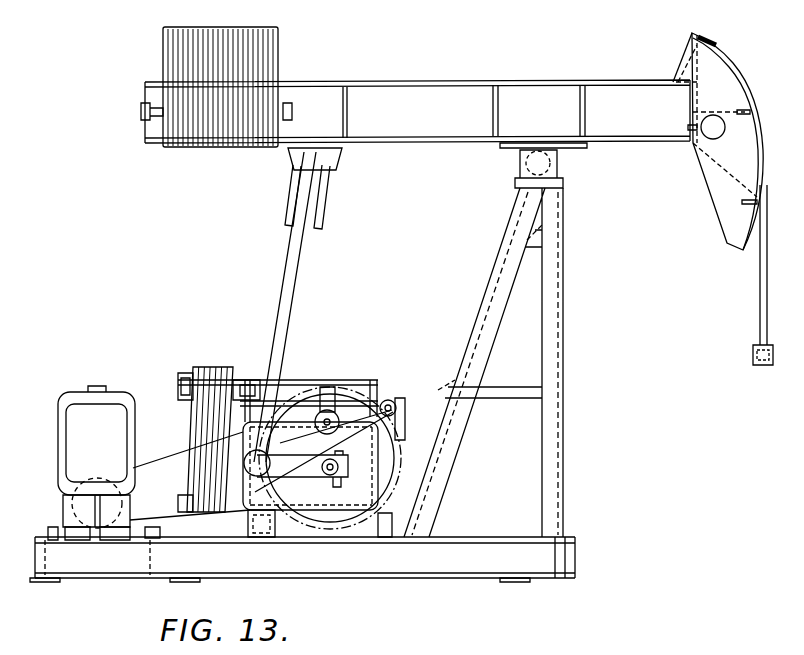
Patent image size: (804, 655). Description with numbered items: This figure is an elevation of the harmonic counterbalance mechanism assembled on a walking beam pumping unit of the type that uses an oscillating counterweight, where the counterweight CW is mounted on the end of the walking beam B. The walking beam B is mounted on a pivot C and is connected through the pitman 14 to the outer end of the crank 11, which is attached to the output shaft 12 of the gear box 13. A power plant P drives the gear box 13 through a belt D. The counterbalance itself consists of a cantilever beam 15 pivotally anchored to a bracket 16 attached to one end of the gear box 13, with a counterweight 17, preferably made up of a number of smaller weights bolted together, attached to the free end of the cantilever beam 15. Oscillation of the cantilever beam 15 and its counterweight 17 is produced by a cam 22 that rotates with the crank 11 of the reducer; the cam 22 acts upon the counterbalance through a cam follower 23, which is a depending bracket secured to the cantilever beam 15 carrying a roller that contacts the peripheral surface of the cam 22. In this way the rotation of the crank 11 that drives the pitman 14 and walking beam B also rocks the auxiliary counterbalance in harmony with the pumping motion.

The walking beam B is at (457, 102).
The counterweight CW is at (258, 52).
The pivot C is at (558, 162).
The pitman 14 is at (300, 288).
The gear box 13 is at (367, 503).
The crank 11 is at (318, 462).
The output shaft 12 is at (325, 473).
The cam follower 23 is at (332, 412).
The cantilever beam 15 is at (391, 400).
The bracket 16 is at (404, 416).
The cam 22 is at (370, 460).
The counterweight 17 is at (195, 378).
The power plant P is at (76, 405).
The belt D is at (172, 452).